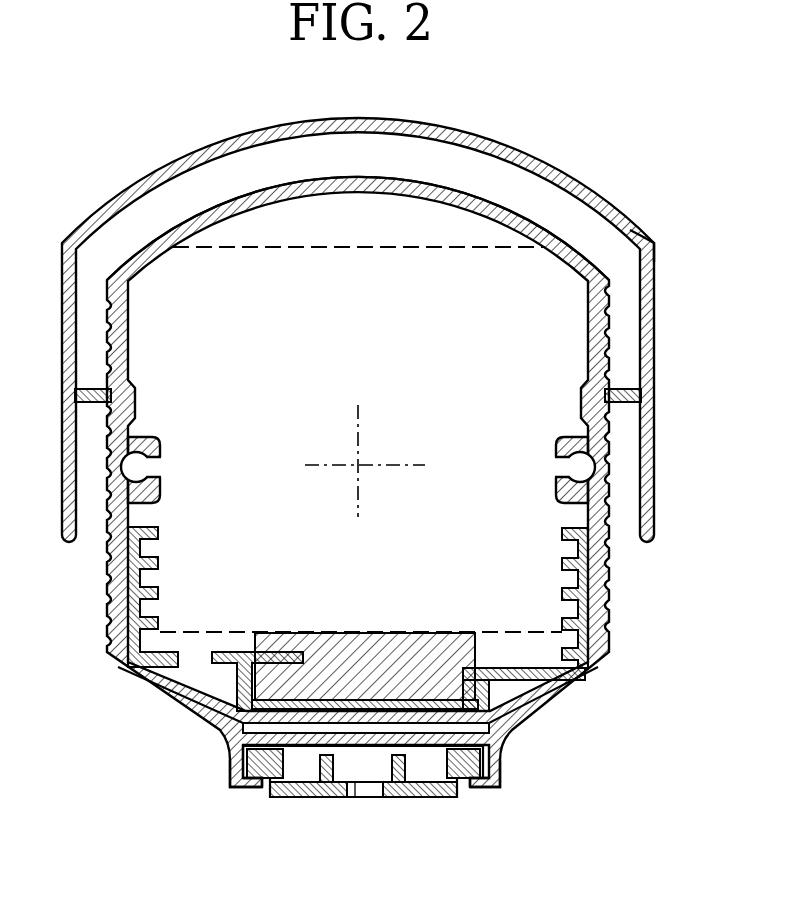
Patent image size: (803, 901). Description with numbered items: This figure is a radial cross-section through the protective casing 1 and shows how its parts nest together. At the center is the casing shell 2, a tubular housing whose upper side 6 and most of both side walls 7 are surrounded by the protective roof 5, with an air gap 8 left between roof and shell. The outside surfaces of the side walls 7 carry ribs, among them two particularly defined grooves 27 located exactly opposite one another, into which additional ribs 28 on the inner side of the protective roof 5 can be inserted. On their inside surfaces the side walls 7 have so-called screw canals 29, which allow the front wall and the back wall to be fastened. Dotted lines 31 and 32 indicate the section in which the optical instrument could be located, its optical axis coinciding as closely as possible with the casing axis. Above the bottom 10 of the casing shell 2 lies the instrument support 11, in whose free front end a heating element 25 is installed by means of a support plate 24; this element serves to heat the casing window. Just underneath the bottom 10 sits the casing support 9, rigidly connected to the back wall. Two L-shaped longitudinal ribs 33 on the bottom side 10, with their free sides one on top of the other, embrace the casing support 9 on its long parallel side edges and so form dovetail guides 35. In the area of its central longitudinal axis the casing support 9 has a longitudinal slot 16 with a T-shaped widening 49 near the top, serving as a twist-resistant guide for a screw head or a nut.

The display device 1 is at (453, 100).
The casing shell 2 is at (365, 460).
The protective roof 5 is at (657, 250).
The upper side 6 is at (303, 177).
The side walls 7 is at (104, 582).
The air gap 8 is at (138, 224).
The casing support 9 is at (363, 811).
The bottom 10 is at (527, 722).
The instrument support 11 is at (526, 662).
The longitudinal slot 16 is at (373, 786).
The support plate 24 is at (400, 698).
The heating element 25 is at (332, 650).
The grooves 27 is at (100, 382).
The ribs 28 is at (80, 405).
The screw canals 29 is at (158, 466).
The dotted line 31 is at (287, 252).
The dotted line 32 is at (200, 632).
The L-shaped longitudinal ribs 33 is at (250, 790).
The dovetail guides 35 is at (257, 806).
The T-shaped widening 49 is at (350, 768).